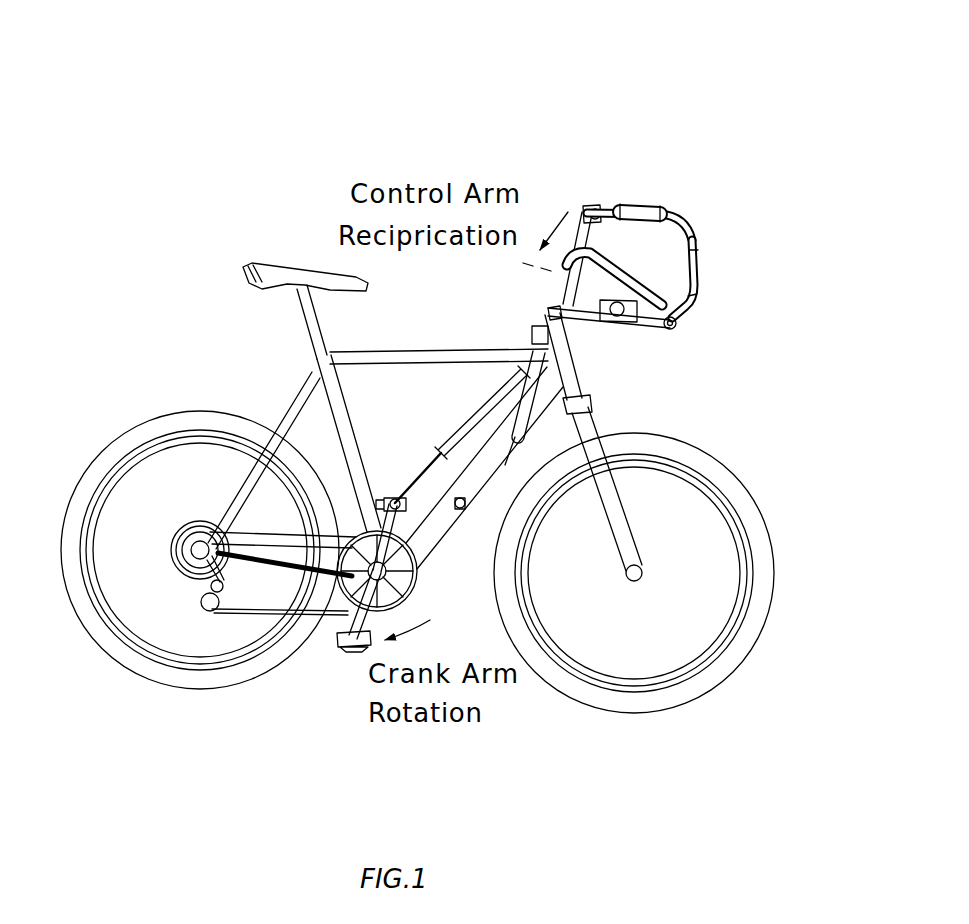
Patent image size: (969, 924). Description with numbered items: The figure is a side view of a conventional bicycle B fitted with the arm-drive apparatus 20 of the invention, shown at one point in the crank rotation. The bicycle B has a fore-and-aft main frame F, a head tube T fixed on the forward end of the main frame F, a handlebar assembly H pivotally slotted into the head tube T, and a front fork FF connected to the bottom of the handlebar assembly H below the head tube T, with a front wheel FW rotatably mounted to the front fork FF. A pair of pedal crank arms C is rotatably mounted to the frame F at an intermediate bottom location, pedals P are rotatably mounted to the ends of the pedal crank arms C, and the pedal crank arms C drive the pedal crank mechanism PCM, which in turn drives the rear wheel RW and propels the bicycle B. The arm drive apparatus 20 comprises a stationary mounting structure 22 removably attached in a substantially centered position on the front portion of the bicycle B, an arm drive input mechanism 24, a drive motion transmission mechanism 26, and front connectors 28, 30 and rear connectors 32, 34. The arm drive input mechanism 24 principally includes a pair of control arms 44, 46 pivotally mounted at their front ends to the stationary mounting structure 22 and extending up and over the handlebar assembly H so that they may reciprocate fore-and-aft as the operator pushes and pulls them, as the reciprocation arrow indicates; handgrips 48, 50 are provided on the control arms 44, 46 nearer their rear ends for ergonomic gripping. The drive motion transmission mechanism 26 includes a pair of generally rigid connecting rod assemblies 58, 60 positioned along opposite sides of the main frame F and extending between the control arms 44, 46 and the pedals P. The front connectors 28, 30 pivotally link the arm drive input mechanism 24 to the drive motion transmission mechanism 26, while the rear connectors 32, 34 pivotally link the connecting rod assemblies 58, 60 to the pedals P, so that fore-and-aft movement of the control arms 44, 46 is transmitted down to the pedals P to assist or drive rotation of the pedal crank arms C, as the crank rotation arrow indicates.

The arm drive apparatus 20 is at (668, 209).
The stationary mounting structure 22 is at (668, 340).
The arm drive input mechanism 24 is at (707, 272).
The drive motion transmission mechanism 26 is at (461, 395).
The front connector 28 is at (533, 320).
The front connector 30 is at (593, 208).
The rear connector 32 is at (340, 633).
The rear connector 34 is at (399, 498).
The control arm 44 is at (612, 255).
The control arm 46 is at (693, 210).
The handgrip 48 is at (580, 210).
The handgrip 50 is at (647, 210).
The connecting rod assembly 58 is at (490, 477).
The connecting rod assembly 60 is at (458, 425).
The bicycle B is at (225, 255).
The main frame F is at (440, 345).
The rear wheel RW is at (92, 457).
The front wheel FW is at (770, 545).
The handlebar assembly H is at (713, 227).
The head tube T is at (578, 338).
The front fork FF is at (590, 412).
The pedal crank arm C is at (386, 518).
The pedal P is at (326, 587).
The pedal crank mechanism PCM is at (425, 588).